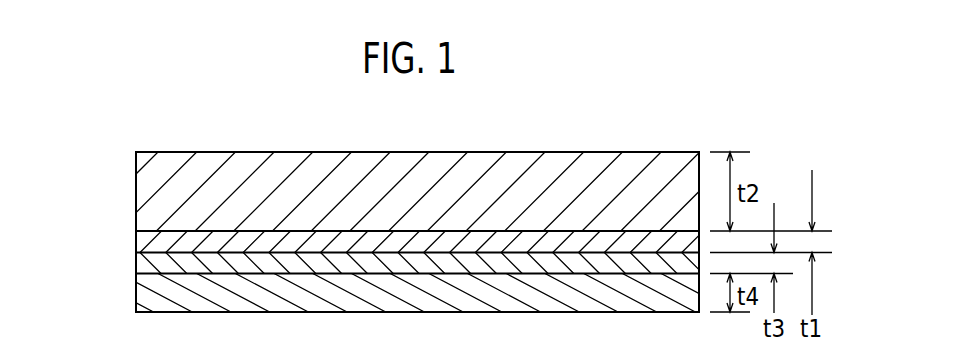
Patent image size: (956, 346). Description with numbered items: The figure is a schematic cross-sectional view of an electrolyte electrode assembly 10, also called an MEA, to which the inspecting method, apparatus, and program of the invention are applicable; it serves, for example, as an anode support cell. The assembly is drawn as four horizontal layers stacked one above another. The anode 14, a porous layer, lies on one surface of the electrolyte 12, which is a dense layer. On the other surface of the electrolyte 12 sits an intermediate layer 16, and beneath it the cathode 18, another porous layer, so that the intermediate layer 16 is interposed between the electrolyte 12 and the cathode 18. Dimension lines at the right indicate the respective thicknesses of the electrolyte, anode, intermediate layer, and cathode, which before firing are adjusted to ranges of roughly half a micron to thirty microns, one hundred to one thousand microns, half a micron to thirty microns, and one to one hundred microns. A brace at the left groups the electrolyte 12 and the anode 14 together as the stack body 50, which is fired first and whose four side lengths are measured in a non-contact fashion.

The electrolyte electrode assembly 10 is at (604, 114).
The stack body 50 is at (80, 173).
The anode 14 is at (137, 186).
The electrolyte 12 is at (137, 237).
The intermediate layer 16 is at (137, 260).
The cathode 18 is at (137, 292).